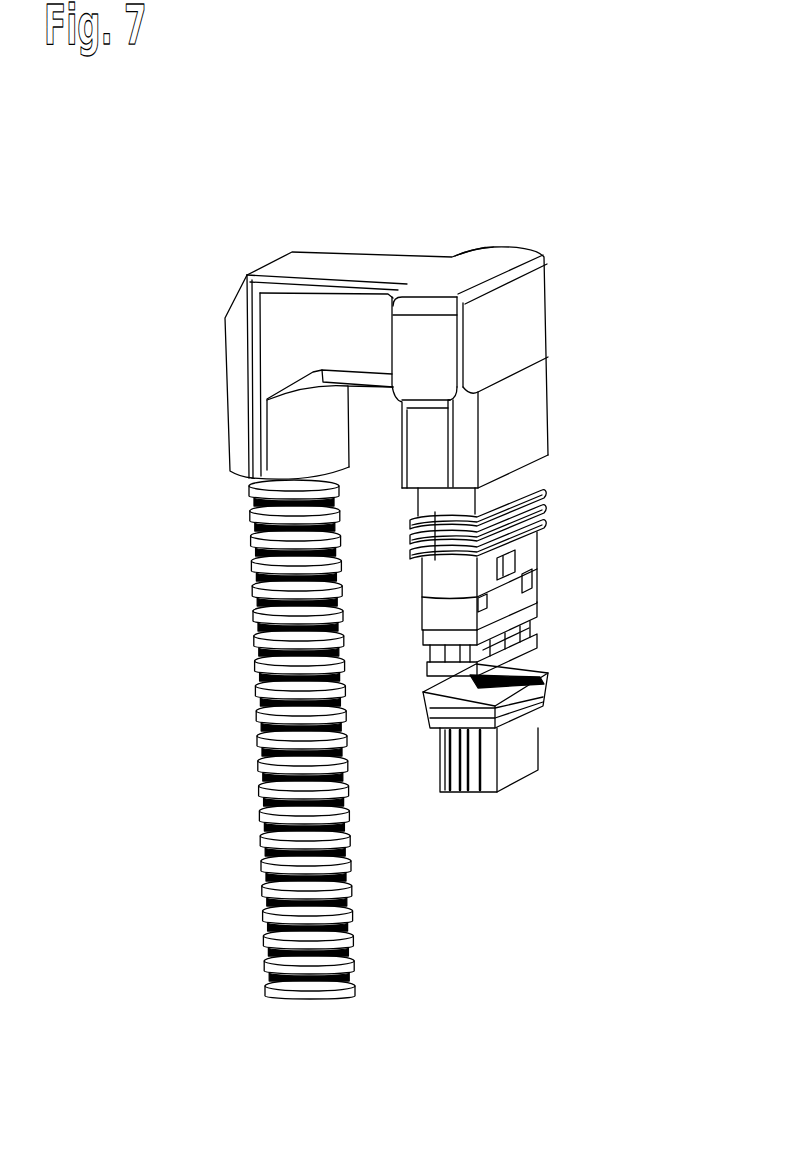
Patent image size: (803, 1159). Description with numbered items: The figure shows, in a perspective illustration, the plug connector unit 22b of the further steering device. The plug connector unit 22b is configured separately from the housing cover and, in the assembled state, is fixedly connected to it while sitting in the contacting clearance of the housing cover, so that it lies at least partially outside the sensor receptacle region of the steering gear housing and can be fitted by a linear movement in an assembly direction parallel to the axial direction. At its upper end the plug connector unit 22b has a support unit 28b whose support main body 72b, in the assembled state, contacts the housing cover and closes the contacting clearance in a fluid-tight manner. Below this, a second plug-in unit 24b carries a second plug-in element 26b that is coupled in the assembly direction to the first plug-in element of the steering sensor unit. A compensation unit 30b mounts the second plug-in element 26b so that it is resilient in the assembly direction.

The plug connector unit 22b is at (600, 242).
The support main body 72b is at (447, 273).
The support unit 28b is at (510, 235).
The compensation unit 30b is at (557, 608).
The second plug-in unit 24b is at (567, 651).
The second plug-in element 26b is at (547, 697).